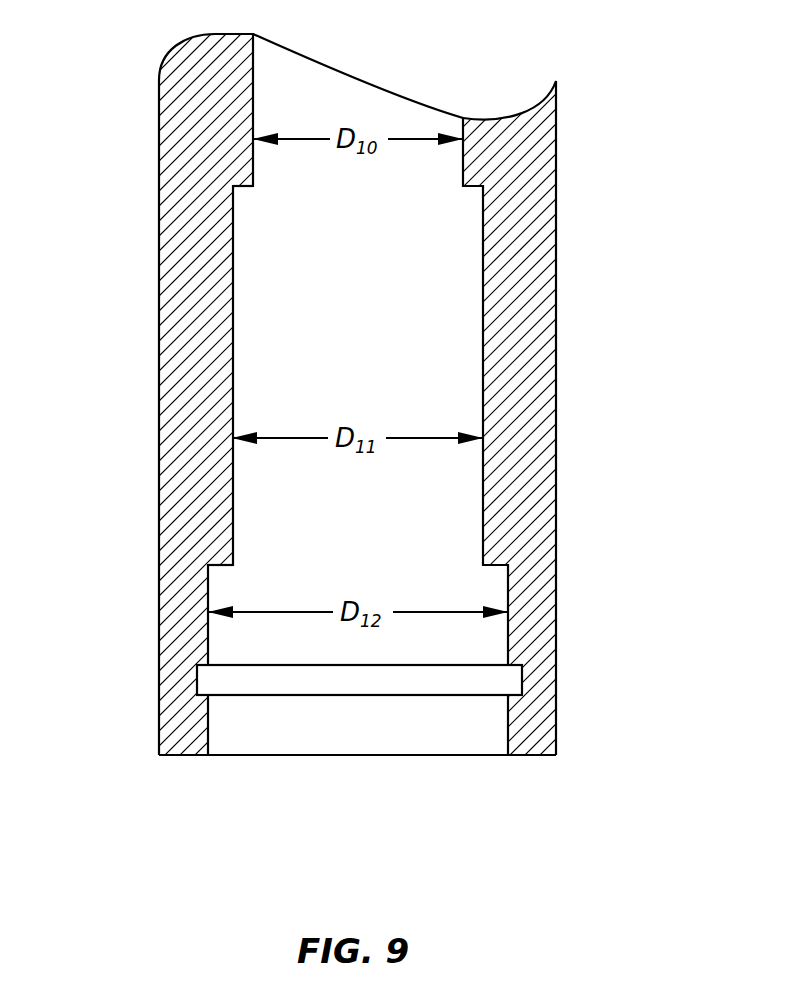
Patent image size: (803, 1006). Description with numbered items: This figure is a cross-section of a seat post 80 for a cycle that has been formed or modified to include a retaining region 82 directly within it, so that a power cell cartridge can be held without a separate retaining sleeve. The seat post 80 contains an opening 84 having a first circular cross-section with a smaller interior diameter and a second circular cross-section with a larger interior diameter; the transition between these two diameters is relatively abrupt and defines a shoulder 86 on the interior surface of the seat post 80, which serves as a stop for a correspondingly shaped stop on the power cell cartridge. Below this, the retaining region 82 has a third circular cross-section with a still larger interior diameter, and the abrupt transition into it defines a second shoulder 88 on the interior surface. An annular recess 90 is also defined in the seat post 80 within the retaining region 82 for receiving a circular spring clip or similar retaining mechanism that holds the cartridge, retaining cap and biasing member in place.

The seat post 80 is at (556, 207).
The retaining region 82 is at (597, 565).
The opening 84 is at (446, 355).
The shoulder 86 is at (236, 190).
The shoulder 88 is at (221, 566).
The annular recess 90 is at (278, 685).